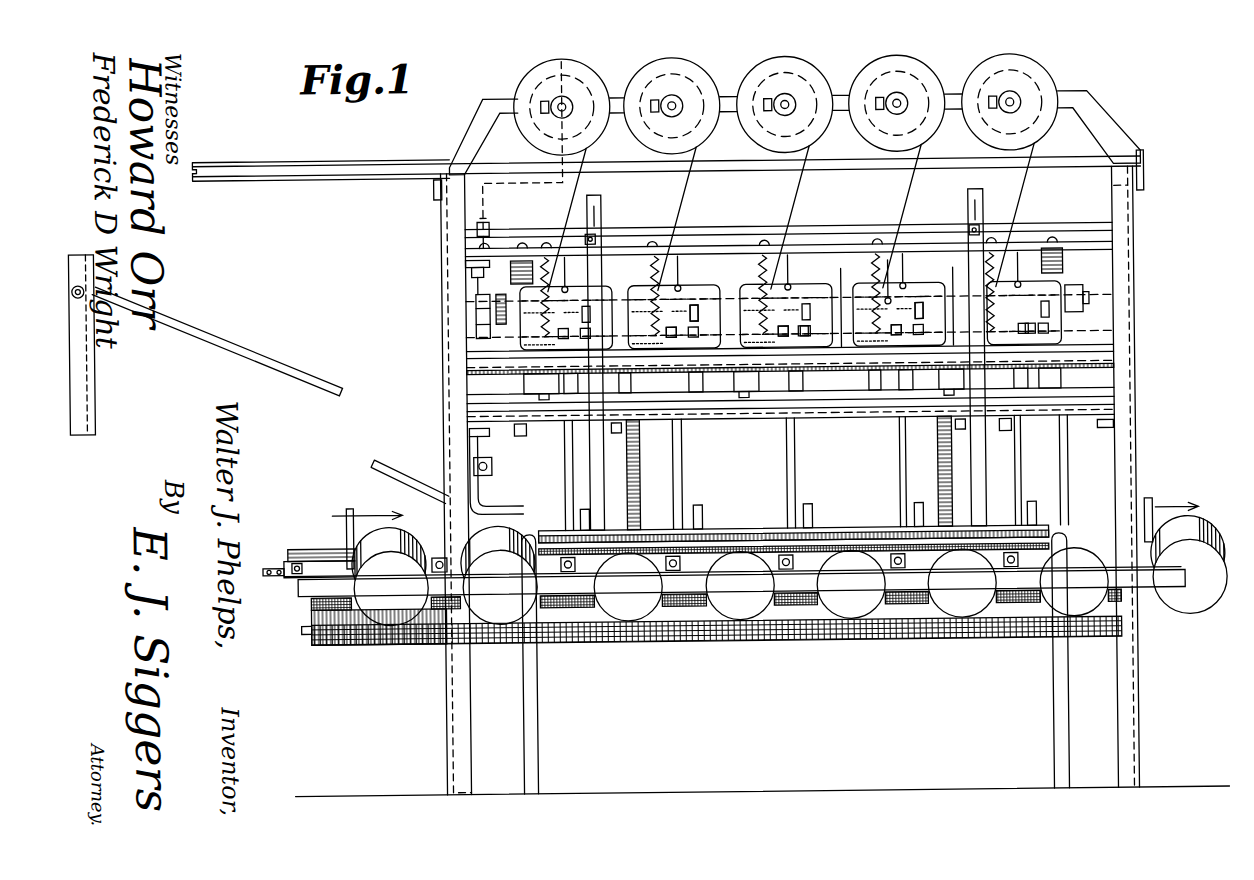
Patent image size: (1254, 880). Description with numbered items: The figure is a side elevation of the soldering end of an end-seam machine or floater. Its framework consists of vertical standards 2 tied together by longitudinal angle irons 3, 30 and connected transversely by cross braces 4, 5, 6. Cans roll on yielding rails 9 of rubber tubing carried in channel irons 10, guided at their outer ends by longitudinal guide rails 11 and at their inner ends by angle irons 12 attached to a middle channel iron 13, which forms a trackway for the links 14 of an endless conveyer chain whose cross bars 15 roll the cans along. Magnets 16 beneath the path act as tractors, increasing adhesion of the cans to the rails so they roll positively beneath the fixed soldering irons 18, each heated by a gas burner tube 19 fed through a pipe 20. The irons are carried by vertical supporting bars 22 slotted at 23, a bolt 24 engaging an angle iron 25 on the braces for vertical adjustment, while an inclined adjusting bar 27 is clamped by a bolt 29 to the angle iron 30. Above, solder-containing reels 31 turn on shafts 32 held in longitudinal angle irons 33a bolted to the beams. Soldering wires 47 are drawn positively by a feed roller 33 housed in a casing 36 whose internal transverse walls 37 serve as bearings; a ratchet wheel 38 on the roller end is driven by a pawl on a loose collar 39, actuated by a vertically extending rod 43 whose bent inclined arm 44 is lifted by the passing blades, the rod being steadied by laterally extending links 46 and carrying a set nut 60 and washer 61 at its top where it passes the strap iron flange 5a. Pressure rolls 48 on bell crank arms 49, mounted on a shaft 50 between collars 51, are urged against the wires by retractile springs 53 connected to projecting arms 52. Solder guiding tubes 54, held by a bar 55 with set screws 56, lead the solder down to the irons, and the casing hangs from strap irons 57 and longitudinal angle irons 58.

The vertical standards 2 is at (1150, 457).
The longitudinal angle iron 3 is at (396, 161).
The cross braces 4 is at (437, 190).
The cross braces 5 is at (468, 376).
The strap iron flange 5a is at (468, 262).
The cross braces 6 is at (490, 432).
The yielding rails 9 is at (782, 610).
The channel irons 10 is at (690, 622).
The longitudinal guide rails 11 is at (868, 585).
The angle irons 12 is at (310, 545).
The middle channel iron 13 is at (300, 582).
The conveyer chain links 14 is at (274, 563).
The cross bar 15 is at (1165, 500).
The magnets 16 is at (358, 642).
The soldering irons 18 is at (758, 528).
The gas burner tube 19 is at (863, 546).
The pipe 20 is at (536, 722).
The supporting bars 22 is at (590, 480).
The slot 23 is at (604, 210).
The bolt 24 is at (600, 238).
The angle iron 25 is at (805, 232).
The adjusting bar 27 is at (640, 465).
The bolt 29 is at (640, 438).
The longitudinal angle iron 30 is at (804, 340).
The solder-containing reels 31 is at (706, 72).
The shafts 32 is at (800, 100).
The feed roller 33 is at (695, 310).
The longitudinal angle irons 33a is at (957, 95).
The casing 36 is at (700, 284).
The internal transverse walls 37 is at (899, 299).
The ratchet wheel 38 is at (498, 318).
The loose collar 39 is at (478, 325).
The vertically extending rod 43 is at (468, 403).
The inclined arm 44 is at (288, 368).
The laterally extending links 46 is at (490, 488).
The soldering wires 47 is at (800, 186).
The pressure rolls 48 is at (772, 290).
The bell crank arm 49 is at (696, 321).
The shaft 50 is at (1080, 318).
The collars 51 is at (895, 340).
The projecting arm 52 is at (782, 340).
The retractile spring 53 is at (893, 288).
The solder guiding tubes 54 is at (565, 456).
The bar 55 is at (830, 405).
The set screws 56 is at (680, 384).
The strap irons 57 is at (526, 258).
The longitudinal angle irons 58 is at (1088, 360).
The set nut 60 is at (492, 220).
The washer 61 is at (470, 228).